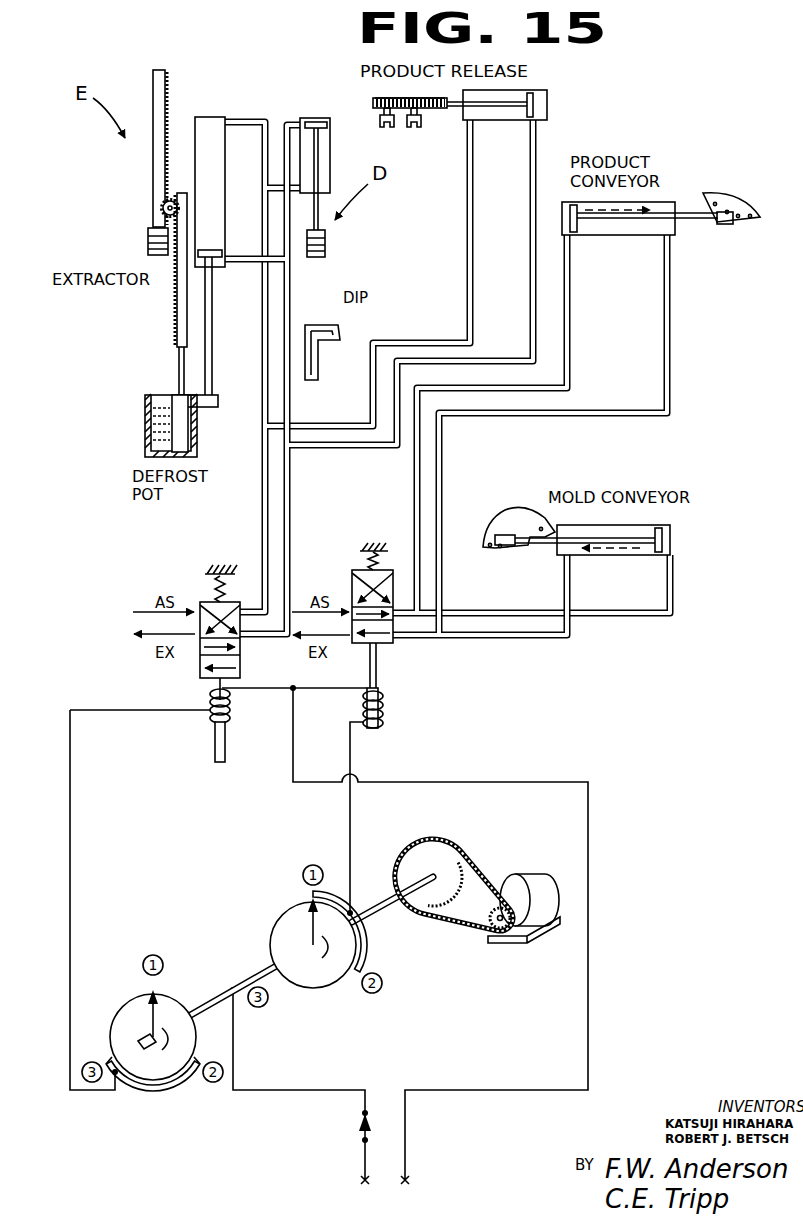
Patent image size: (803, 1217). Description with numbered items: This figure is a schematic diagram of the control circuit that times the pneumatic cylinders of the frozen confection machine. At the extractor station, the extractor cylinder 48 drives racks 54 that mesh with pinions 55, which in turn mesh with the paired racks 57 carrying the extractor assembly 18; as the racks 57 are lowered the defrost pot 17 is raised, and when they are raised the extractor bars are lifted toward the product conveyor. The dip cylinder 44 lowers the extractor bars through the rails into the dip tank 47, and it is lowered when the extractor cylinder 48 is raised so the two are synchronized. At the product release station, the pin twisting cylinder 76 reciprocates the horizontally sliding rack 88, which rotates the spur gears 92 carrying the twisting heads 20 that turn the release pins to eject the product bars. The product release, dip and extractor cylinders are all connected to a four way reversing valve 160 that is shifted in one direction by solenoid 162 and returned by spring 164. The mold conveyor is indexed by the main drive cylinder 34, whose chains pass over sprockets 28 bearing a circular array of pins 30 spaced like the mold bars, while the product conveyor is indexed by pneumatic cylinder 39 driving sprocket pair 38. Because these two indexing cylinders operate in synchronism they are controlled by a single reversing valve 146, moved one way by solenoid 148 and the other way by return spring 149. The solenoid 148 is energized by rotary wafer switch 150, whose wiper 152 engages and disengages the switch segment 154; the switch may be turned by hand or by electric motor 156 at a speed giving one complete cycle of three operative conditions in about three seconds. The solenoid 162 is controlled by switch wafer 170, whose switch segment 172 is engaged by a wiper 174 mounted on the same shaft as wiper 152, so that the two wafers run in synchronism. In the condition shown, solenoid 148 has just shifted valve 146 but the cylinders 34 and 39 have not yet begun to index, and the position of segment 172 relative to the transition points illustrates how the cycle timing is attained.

The defrost pot 17 is at (145, 423).
The extractor assembly 18 is at (133, 249).
The twisting heads 20 is at (397, 130).
The sprockets 28 is at (510, 506).
The pins 30 is at (508, 544).
The main drive cylinder 34 is at (642, 558).
The sprocket pair 38 is at (745, 203).
The pneumatic cylinder 39 is at (637, 238).
The dip cylinder 44 is at (330, 164).
The dip tank 47 is at (340, 337).
The extractor cylinder 48 is at (212, 122).
The racks 54 is at (176, 318).
The pinions 55 is at (161, 208).
The racks 57 is at (167, 86).
The pin twisting cylinder 76 is at (547, 105).
The rack 88 is at (373, 103).
The spur gears 92 is at (426, 98).
The reversing valve 146 is at (352, 580).
The solenoid 148 is at (383, 690).
The return spring 149 is at (367, 553).
The rotary wafer switch 150 is at (316, 990).
The wiper 152 is at (305, 926).
The switch segment 154 is at (375, 952).
The electric motor 156 is at (548, 863).
The four way reversing valve 160 is at (200, 670).
The solenoid 162 is at (213, 743).
The spring 164 is at (213, 577).
The switch wafer 170 is at (175, 1067).
The switch segment 172 is at (152, 1085).
The wiper 174 is at (140, 1015).